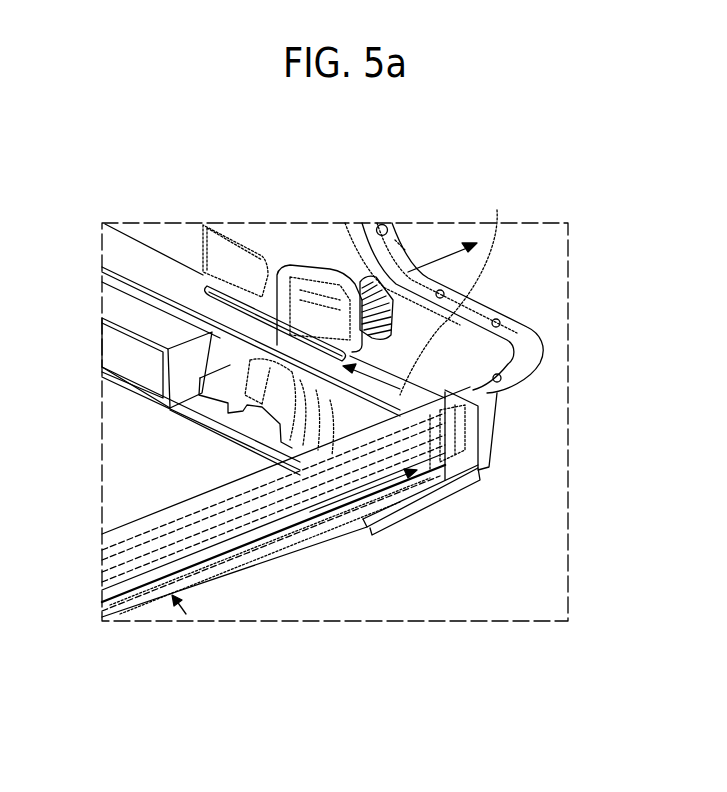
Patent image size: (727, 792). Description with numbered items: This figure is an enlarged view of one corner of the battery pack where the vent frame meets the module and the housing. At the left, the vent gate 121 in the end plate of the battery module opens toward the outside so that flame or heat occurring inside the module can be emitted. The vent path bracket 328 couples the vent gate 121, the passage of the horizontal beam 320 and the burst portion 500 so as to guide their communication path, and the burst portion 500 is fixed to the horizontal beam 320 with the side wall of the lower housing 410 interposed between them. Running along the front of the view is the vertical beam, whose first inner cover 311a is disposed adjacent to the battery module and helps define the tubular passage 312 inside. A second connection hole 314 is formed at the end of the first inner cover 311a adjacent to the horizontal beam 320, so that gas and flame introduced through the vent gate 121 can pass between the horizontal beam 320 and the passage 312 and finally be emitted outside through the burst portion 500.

The vent gate 121 is at (112, 304).
The vent path bracket 328 is at (285, 290).
The burst portion 500 is at (366, 272).
The horizontal beam 320 is at (456, 287).
The lower housing 410 is at (530, 331).
The first inner cover 311a is at (478, 408).
The passage 312 is at (180, 608).
The second connection hole 314 is at (487, 467).